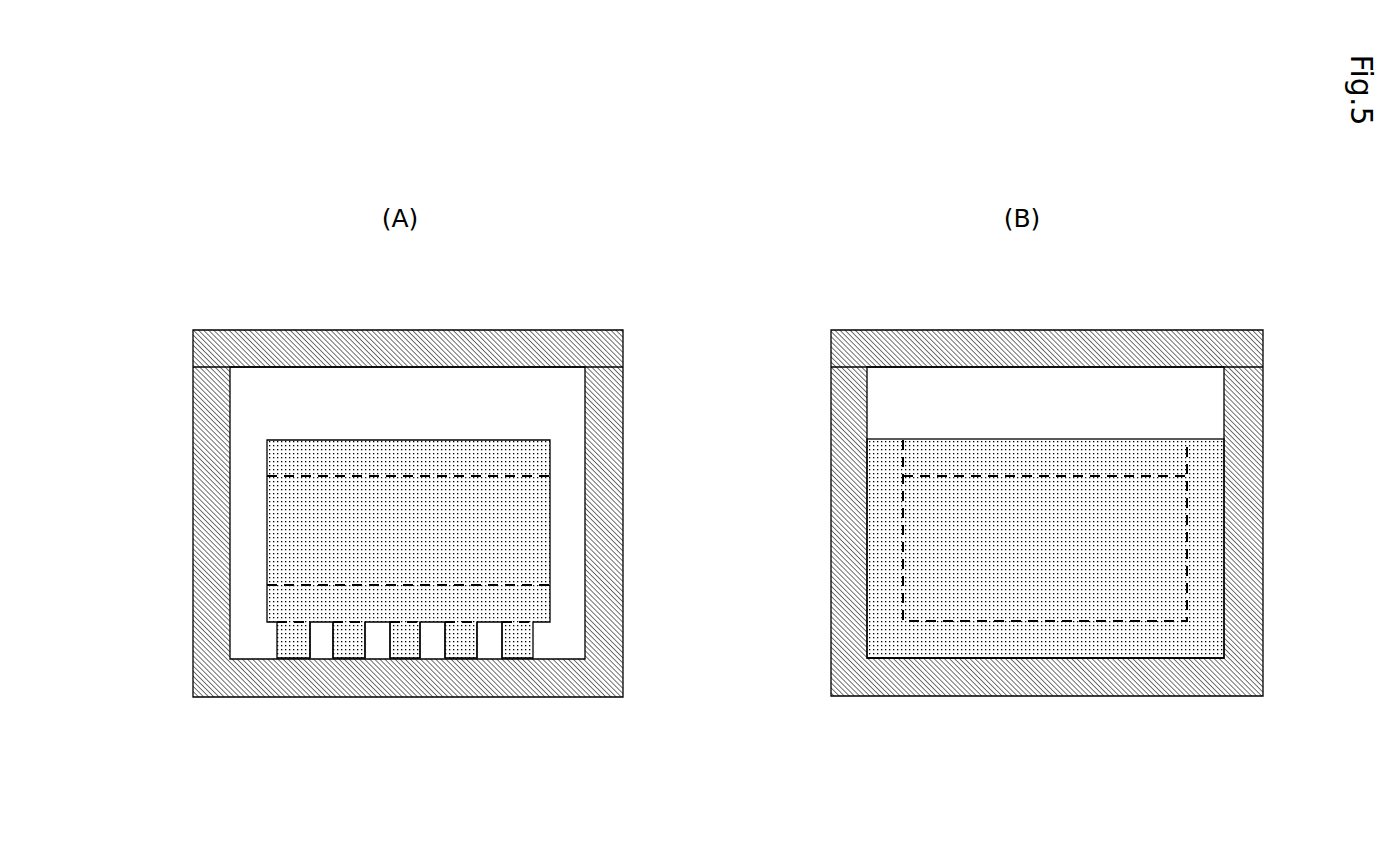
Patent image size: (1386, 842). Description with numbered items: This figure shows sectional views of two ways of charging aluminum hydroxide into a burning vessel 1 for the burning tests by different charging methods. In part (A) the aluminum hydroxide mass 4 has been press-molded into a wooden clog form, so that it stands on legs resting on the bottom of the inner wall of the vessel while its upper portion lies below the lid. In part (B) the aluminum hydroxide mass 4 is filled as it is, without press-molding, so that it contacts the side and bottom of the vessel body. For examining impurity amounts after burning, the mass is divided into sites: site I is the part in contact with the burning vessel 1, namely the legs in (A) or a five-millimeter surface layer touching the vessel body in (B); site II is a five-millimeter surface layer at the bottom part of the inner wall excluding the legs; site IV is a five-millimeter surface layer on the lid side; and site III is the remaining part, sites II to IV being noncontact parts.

The burning vessel 1 is at (190, 477).
The aluminum hydroxide mass 4 is at (492, 438).
The site I is at (519, 643).
The site II is at (528, 598).
The site III is at (529, 538).
The site IV is at (528, 464).